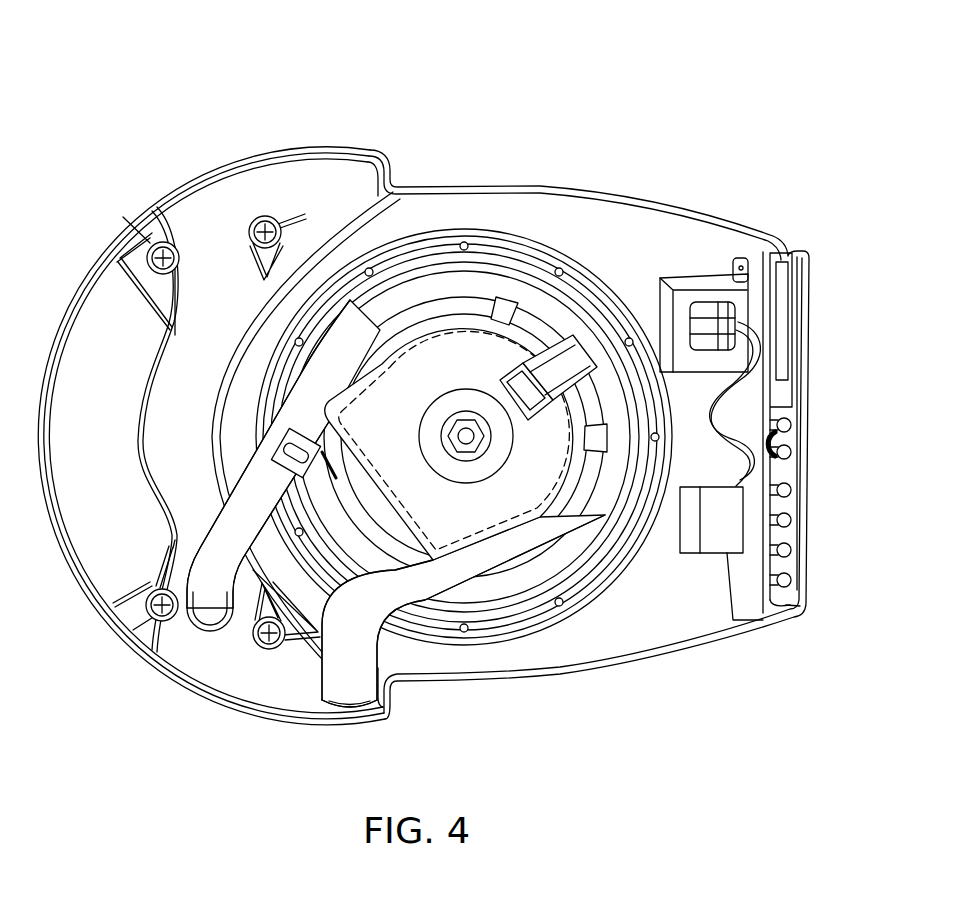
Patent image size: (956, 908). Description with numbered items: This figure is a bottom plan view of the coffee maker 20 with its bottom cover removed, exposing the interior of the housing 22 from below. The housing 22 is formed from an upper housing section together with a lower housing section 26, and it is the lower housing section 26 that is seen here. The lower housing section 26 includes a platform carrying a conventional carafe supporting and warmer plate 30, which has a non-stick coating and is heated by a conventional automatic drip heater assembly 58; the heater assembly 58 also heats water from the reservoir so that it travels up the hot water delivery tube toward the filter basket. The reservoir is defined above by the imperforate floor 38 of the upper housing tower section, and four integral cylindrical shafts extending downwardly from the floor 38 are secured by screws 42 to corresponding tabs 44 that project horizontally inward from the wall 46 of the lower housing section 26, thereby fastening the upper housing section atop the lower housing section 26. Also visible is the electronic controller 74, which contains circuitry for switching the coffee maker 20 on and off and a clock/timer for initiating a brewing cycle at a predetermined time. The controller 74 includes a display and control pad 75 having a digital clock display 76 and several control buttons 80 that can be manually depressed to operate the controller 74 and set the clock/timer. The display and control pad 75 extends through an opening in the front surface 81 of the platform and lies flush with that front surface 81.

The coffee maker 20 is at (566, 96).
The housing 22 is at (456, 188).
The lower housing section 26 is at (345, 150).
The warmer plate 30 is at (535, 595).
The imperforate floor 38 is at (247, 197).
The screws 42 is at (143, 273).
The tabs 44 is at (150, 230).
The wall 46 is at (353, 208).
The automatic drip heater assembly 58 is at (548, 518).
The electronic controller 74 is at (688, 258).
The display and control pad 75 is at (798, 565).
The digital clock display 76 is at (782, 363).
The control buttons 80 is at (791, 448).
The front surface 81 is at (806, 612).